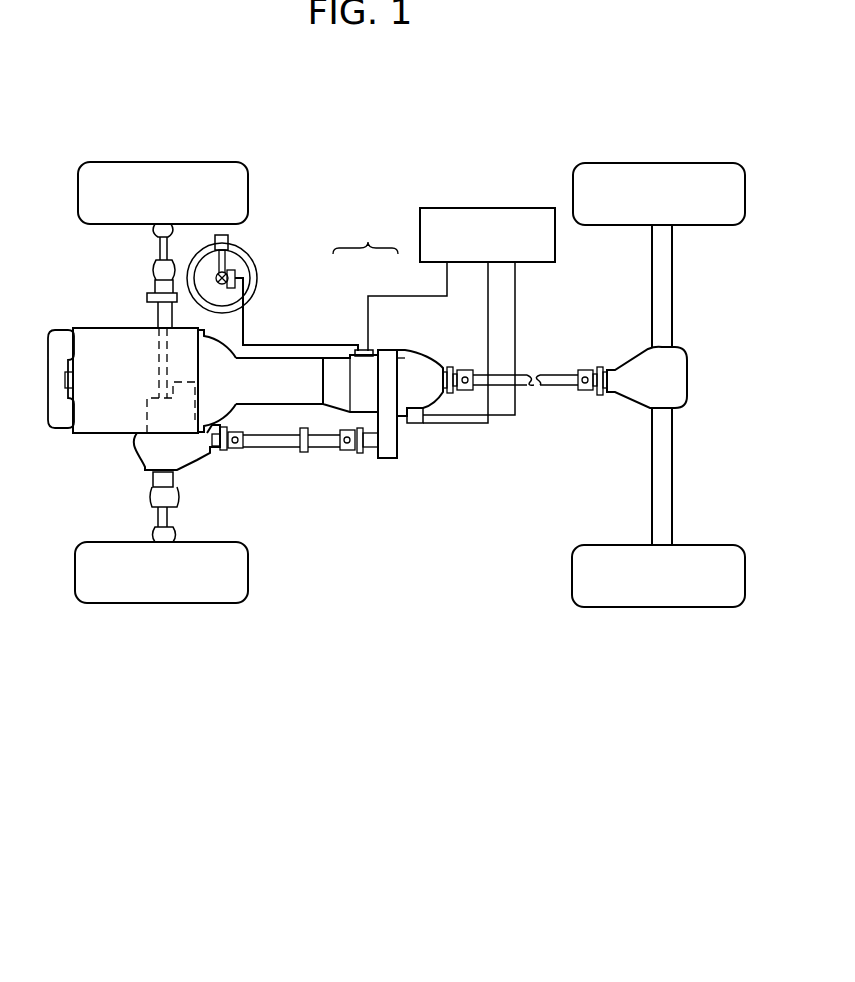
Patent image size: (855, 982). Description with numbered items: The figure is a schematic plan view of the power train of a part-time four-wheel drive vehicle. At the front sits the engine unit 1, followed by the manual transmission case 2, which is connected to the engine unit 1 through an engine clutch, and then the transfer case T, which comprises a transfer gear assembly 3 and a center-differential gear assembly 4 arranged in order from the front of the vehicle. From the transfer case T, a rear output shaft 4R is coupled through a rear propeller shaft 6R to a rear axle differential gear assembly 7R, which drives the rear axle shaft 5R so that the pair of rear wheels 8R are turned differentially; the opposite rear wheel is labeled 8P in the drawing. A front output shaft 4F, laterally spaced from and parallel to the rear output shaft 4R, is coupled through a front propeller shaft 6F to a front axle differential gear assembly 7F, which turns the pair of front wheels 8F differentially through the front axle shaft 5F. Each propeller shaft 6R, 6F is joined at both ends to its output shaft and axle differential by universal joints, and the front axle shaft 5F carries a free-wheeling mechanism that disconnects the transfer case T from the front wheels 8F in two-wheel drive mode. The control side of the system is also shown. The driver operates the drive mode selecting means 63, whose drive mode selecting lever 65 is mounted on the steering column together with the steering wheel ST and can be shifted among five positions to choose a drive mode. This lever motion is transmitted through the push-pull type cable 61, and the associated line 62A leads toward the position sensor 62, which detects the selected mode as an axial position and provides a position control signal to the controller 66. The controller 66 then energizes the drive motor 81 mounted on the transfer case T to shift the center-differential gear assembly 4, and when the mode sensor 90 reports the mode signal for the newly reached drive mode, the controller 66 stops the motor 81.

The engine unit 1 is at (92, 337).
The manual transmission case 2 is at (273, 388).
The transfer gear assembly 3 is at (355, 378).
The center-differential gear assembly 4 is at (420, 368).
The transfer case T is at (365, 236).
The front output shaft 4F is at (377, 452).
The rear output shaft 4R is at (445, 394).
The front axle shaft 5F is at (158, 320).
The rear axle shaft 5R is at (667, 293).
The front propeller shaft 6F is at (320, 448).
The rear propeller shaft 6R is at (523, 388).
The front axle differential gear assembly 7F is at (148, 455).
The rear axle differential gear assembly 7R is at (630, 373).
The front wheels 8F is at (173, 162).
The rear wheels 8R is at (668, 163).
The rear wheel 8P is at (662, 612).
The push-pull type cable 61 is at (318, 345).
The position sensor 62 is at (370, 351).
The steering angle sensor lead 62A is at (296, 314).
The drive mode selecting means 63 is at (232, 262).
The drive mode selecting lever 65 is at (224, 235).
The controller 66 is at (500, 208).
The drive motor 81 is at (413, 425).
The mode sensor 90 is at (413, 363).
The steering wheel ST is at (258, 278).